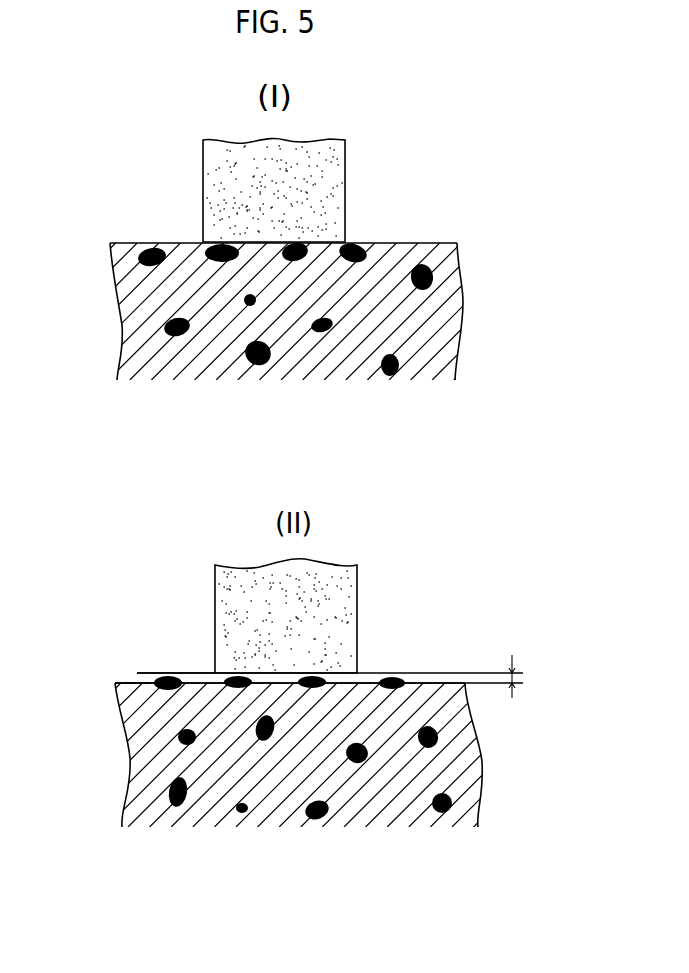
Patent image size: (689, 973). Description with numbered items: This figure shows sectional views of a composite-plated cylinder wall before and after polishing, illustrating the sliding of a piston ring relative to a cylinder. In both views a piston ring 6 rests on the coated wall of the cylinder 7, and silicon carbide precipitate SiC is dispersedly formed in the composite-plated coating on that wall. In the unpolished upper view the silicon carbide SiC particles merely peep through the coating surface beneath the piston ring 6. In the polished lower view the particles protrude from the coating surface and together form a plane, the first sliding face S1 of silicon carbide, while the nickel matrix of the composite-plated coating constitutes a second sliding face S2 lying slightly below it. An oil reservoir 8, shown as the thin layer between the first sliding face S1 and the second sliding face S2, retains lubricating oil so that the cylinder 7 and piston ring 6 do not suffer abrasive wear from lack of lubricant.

The piston ring 6 is at (330, 183).
The cylinder 7 is at (430, 350).
The oil reservoir 8 is at (280, 682).
The first sliding face S1 is at (149, 675).
The second sliding face S2 is at (128, 682).
The silicon carbide precipitate SiC is at (207, 248).